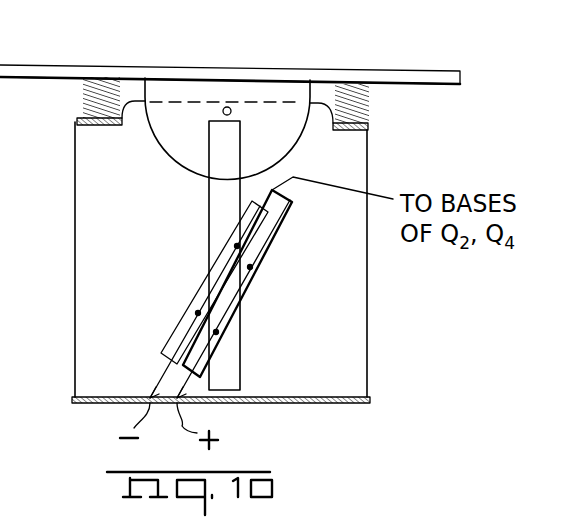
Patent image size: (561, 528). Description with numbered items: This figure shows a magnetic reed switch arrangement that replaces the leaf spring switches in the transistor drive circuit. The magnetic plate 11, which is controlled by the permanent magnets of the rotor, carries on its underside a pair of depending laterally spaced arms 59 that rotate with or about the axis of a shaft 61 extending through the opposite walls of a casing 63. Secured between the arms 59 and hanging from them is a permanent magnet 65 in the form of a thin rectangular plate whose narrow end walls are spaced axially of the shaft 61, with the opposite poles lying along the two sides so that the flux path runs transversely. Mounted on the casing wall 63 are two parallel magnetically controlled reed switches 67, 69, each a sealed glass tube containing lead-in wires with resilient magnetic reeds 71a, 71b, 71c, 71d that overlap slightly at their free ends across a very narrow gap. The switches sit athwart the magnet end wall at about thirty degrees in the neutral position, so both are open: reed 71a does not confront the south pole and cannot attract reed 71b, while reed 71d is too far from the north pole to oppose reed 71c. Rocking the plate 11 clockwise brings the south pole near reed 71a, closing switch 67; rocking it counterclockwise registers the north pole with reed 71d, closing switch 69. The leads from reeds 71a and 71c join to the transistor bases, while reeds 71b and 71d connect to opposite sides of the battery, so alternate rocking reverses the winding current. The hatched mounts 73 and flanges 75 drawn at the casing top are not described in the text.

The magnetic plate 11 is at (410, 70).
The depending laterally spaced arms 59 is at (287, 155).
The shaft 61 is at (227, 107).
The casing wall 63 is at (367, 282).
The permanent magnet 65 is at (208, 207).
The reed switch 67 is at (165, 347).
The reed switch 69 is at (240, 287).
The resilient magnetic reed 71a is at (221, 262).
The resilient magnetic reed 71b is at (208, 297).
The resilient magnetic reed 71c is at (243, 292).
The resilient magnetic reed 71d is at (230, 320).
The resilient cushion 73 is at (85, 101).
The flange 75 is at (100, 126).